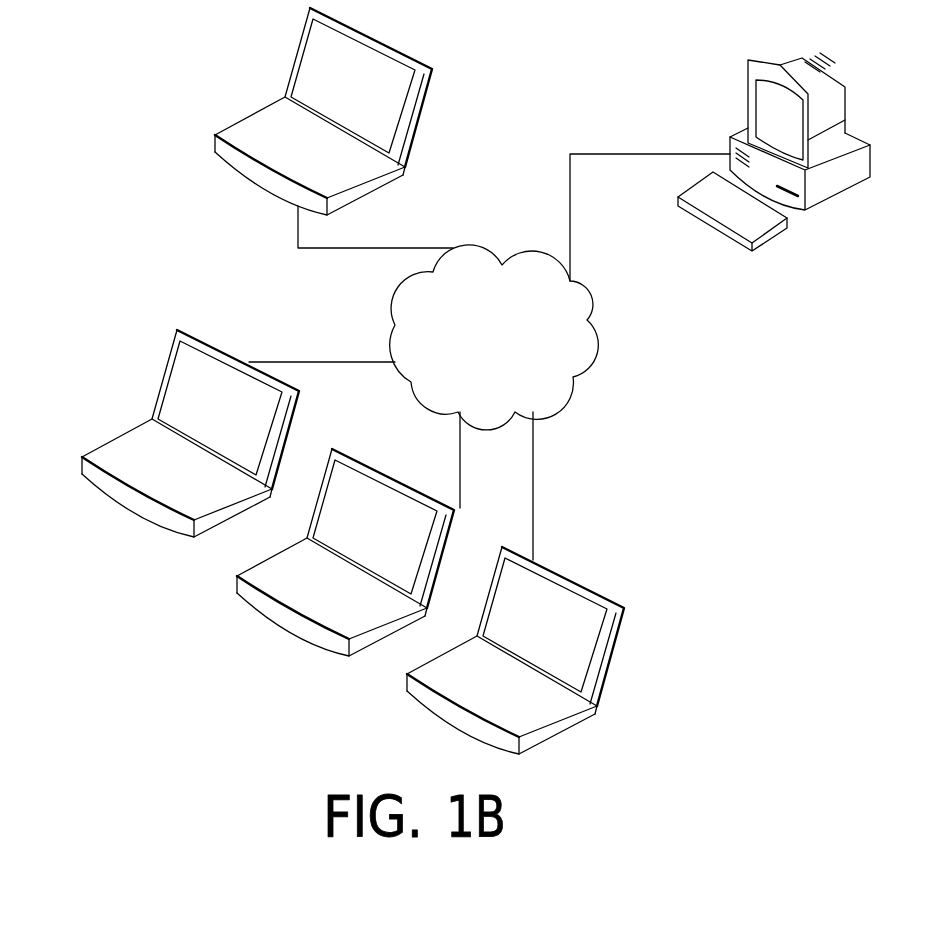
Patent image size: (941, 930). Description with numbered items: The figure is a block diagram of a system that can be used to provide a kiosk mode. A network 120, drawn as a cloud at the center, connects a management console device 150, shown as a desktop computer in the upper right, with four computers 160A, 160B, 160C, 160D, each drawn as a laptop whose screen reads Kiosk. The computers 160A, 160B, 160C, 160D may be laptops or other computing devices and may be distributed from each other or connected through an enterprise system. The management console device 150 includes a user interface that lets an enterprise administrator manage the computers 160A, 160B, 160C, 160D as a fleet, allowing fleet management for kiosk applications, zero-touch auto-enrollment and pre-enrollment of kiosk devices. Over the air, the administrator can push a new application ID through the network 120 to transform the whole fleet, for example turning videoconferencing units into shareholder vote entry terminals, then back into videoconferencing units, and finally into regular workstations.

The network 120 is at (555, 350).
The management console device 150 is at (848, 86).
The computer 160A is at (382, 41).
The computer 160B is at (216, 347).
The computer 160C is at (375, 468).
The computer 160D is at (597, 595).